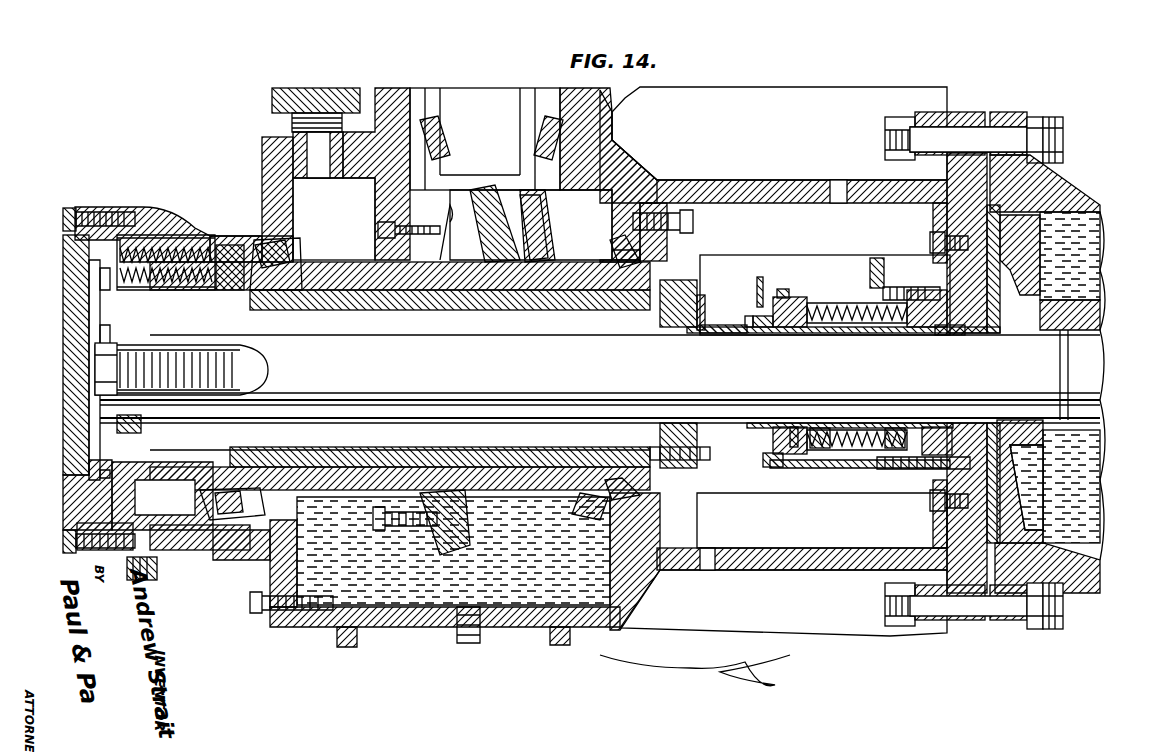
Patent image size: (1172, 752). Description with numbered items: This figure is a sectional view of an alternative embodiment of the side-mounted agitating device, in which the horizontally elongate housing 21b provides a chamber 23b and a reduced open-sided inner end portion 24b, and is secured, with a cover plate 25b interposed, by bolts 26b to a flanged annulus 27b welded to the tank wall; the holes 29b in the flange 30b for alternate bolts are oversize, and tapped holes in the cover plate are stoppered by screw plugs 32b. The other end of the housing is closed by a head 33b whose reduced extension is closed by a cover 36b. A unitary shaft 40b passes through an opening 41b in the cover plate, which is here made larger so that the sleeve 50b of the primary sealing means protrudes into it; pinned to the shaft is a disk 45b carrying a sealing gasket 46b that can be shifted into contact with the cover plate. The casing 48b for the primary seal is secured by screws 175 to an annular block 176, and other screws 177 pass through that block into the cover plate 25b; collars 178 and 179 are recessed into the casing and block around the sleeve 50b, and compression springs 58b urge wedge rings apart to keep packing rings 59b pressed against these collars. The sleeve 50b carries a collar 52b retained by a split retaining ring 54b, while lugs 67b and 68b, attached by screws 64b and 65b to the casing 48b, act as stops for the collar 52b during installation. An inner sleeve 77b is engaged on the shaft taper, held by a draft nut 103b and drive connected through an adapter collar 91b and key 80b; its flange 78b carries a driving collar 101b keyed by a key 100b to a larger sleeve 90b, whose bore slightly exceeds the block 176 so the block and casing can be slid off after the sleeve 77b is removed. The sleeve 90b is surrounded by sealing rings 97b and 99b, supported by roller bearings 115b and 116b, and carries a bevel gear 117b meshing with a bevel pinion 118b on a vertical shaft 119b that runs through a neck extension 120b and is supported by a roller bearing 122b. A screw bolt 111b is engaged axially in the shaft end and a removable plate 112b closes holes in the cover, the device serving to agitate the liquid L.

The housing 21b is at (773, 600).
The chamber 23b is at (380, 580).
The reduced open sided inner end portion 24b is at (752, 570).
The cover plate 25b is at (965, 115).
The bolts 26b is at (884, 135).
The flanged annulus 27b is at (1065, 185).
The holes 29b is at (938, 620).
The flange 30b is at (935, 110).
The screw plugs 32b is at (930, 238).
The head 33b is at (232, 200).
The cover 36b is at (90, 210).
The shaft 40b is at (974, 373).
The opening 41b is at (975, 335).
The disk 45b is at (1075, 248).
The sealing gasket 46b is at (1000, 535).
The casing 48b is at (835, 300).
The sleeve 50b is at (815, 333).
The collar 52b is at (768, 330).
The split retaining ring 54b is at (740, 325).
The compression springs 58b is at (865, 430).
The packing rings 59b is at (822, 428).
The screws 64b is at (783, 289).
The screws 65b is at (785, 467).
The lug 67b is at (757, 288).
The lug 68b is at (763, 468).
The sleeve 77b is at (521, 310).
The flange 78b is at (140, 490).
The key 80b is at (235, 345).
The sleeve 90b is at (540, 473).
The adapter collar 91b is at (705, 315).
The sealing ring 97b is at (688, 245).
The sealing ring 99b is at (230, 246).
The key 100b is at (262, 290).
The driving collar 101b is at (181, 236).
The draft nut 103b is at (118, 425).
The screw bolt 111b is at (96, 370).
The removable plate 112b is at (60, 320).
The roller bearing 115b is at (335, 236).
The roller bearing 116b is at (615, 250).
The bevel gear 117b is at (440, 262).
The bevel pinion 118b is at (545, 218).
The vertical shaft 119b is at (485, 95).
The neck extension 120b is at (385, 110).
The roller bearing 122b is at (440, 128).
The screws 175 is at (877, 262).
The annular block 176 is at (920, 288).
The screws 177 is at (895, 465).
The collar 178 is at (797, 427).
The collar 179 is at (917, 428).
The liquid L is at (1085, 230).